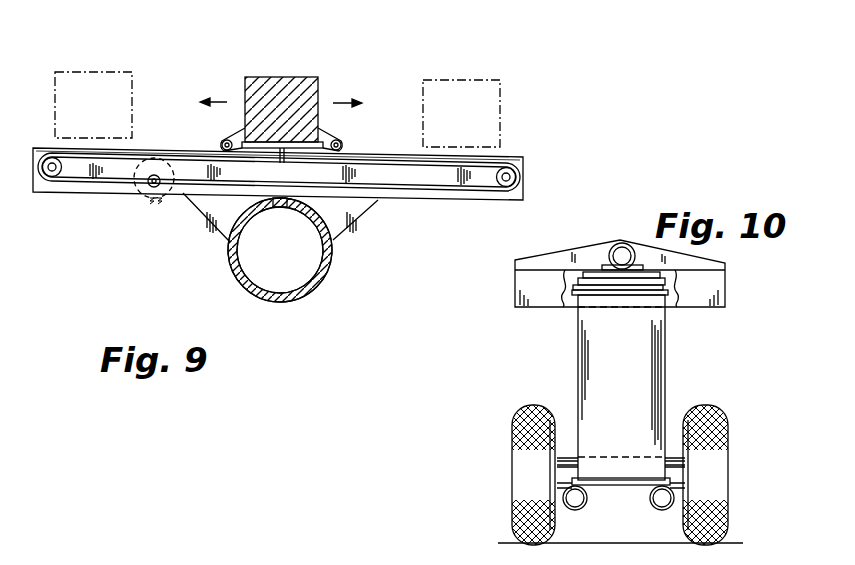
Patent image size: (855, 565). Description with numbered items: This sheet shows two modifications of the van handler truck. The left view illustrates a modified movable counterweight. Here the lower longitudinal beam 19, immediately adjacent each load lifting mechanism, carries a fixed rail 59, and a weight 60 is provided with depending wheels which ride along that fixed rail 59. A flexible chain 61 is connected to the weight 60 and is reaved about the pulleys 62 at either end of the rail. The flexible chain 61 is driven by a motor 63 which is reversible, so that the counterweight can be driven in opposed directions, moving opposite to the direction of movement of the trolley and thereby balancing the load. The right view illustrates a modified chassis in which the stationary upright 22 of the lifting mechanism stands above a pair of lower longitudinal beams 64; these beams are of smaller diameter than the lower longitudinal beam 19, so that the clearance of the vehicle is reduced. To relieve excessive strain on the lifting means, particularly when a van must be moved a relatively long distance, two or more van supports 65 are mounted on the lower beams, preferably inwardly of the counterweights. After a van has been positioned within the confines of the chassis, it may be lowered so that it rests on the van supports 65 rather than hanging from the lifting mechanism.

In FIG. 9, the lower longitudinal beam 19 is at (228, 265).
In FIG. 10, the stationary upright 22 is at (660, 366).
In FIG. 9, the fixed rail 59 is at (155, 150).
In FIG. 9, the weight 60 is at (105, 72).
In FIG. 9, the flexible chain 61 is at (420, 185).
In FIG. 9, the pulleys 62 is at (48, 160).
In FIG. 9, the motor 63 is at (143, 194).
In FIG. 10, the lower longitudinal beams 64 is at (578, 512).
In FIG. 10, the van supports 65 is at (635, 500).